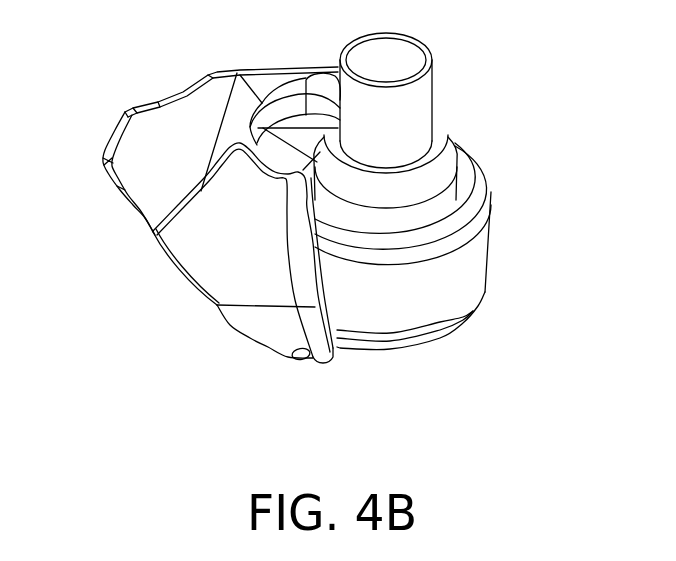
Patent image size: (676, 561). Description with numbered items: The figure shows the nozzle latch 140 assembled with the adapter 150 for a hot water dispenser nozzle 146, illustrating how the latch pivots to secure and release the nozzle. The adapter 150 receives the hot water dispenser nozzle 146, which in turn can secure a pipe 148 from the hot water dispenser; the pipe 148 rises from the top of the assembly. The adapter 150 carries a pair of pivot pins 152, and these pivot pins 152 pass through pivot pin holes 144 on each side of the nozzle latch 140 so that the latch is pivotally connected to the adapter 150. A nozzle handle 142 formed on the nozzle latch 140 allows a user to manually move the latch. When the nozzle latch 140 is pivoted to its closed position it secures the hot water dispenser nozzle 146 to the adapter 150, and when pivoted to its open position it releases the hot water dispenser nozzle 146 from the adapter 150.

The nozzle latch 140 is at (193, 258).
The nozzle handle 142 is at (145, 143).
The pivot pin holes 144 is at (295, 354).
The hot water dispenser nozzle 146 is at (450, 203).
The pipe 148 is at (415, 121).
The adapter 150 is at (465, 273).
The pivot pins 152 is at (313, 361).